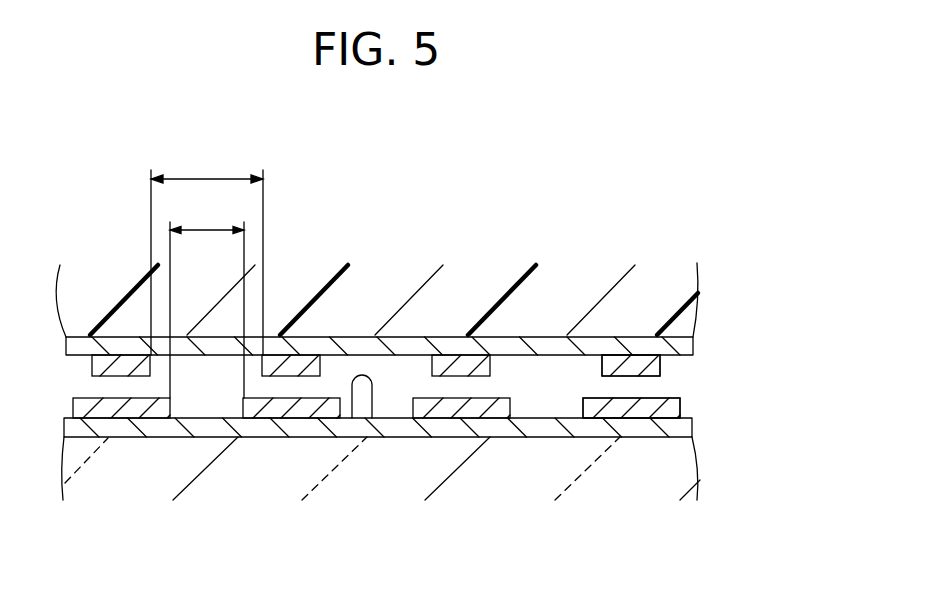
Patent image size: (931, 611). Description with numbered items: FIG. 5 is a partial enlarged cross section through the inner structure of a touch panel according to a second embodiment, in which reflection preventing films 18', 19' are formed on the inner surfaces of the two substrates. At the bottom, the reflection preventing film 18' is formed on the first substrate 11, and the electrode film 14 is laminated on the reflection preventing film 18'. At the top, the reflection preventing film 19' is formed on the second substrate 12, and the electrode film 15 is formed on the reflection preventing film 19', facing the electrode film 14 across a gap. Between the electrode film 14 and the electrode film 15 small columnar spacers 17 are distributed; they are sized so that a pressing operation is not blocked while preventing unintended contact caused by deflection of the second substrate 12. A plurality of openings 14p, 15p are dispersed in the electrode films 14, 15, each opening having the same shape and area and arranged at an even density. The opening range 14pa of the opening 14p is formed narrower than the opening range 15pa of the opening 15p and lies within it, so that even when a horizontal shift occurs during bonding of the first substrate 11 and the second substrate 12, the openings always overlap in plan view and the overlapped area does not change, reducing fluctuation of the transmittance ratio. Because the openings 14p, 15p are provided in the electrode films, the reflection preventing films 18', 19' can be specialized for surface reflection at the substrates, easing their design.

The first substrate 11 is at (682, 462).
The second substrate 12 is at (680, 318).
The electrode film 14 is at (682, 413).
The opening 14p is at (587, 408).
The opening range 14pa is at (207, 298).
The electrode film 15 is at (662, 363).
The opening 15p is at (603, 363).
The opening range 15pa is at (207, 251).
The spacer 17 is at (368, 398).
The reflection preventing film 18' is at (378, 499).
The reflection preventing film 19' is at (379, 249).